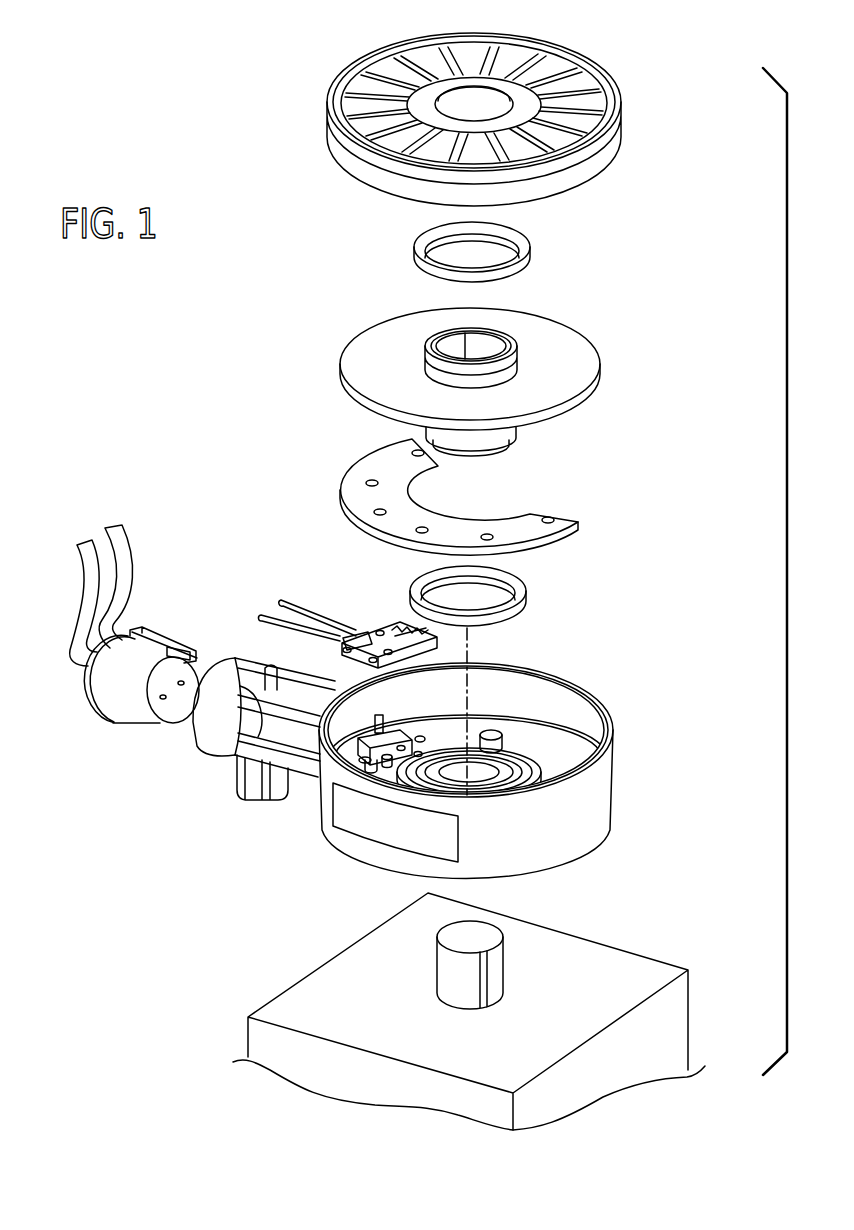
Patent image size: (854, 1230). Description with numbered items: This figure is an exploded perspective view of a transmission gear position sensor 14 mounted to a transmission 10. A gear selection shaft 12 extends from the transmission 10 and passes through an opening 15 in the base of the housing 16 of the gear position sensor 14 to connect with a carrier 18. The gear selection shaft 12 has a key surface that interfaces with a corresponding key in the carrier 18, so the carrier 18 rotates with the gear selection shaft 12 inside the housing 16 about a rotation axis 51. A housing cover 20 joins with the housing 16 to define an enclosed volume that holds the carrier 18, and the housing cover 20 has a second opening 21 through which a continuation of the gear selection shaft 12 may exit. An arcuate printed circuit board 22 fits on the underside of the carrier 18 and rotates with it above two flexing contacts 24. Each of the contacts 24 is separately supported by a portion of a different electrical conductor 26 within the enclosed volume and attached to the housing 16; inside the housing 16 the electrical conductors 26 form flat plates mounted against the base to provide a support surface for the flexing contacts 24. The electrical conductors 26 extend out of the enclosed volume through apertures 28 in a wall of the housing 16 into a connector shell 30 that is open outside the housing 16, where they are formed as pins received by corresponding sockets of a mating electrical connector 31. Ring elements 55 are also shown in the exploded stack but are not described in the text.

The transmission 10 is at (645, 913).
The gear selection shaft 12 is at (486, 932).
The gear position sensor 14 is at (658, 732).
The opening 15 is at (497, 778).
The housing 16 is at (605, 700).
The carrier 18 is at (602, 372).
The housing cover 20 is at (598, 160).
The second opening 21 is at (482, 106).
The arcuate printed circuit board 22 is at (566, 522).
The flexing contacts 24 is at (407, 621).
The electrical conductors 26 is at (282, 604).
The apertures 28 is at (358, 735).
The connector shell 30 is at (210, 742).
The mating electrical connector 31 is at (133, 703).
The rotation axis 51 is at (470, 652).
The ring seal 55 is at (524, 250).